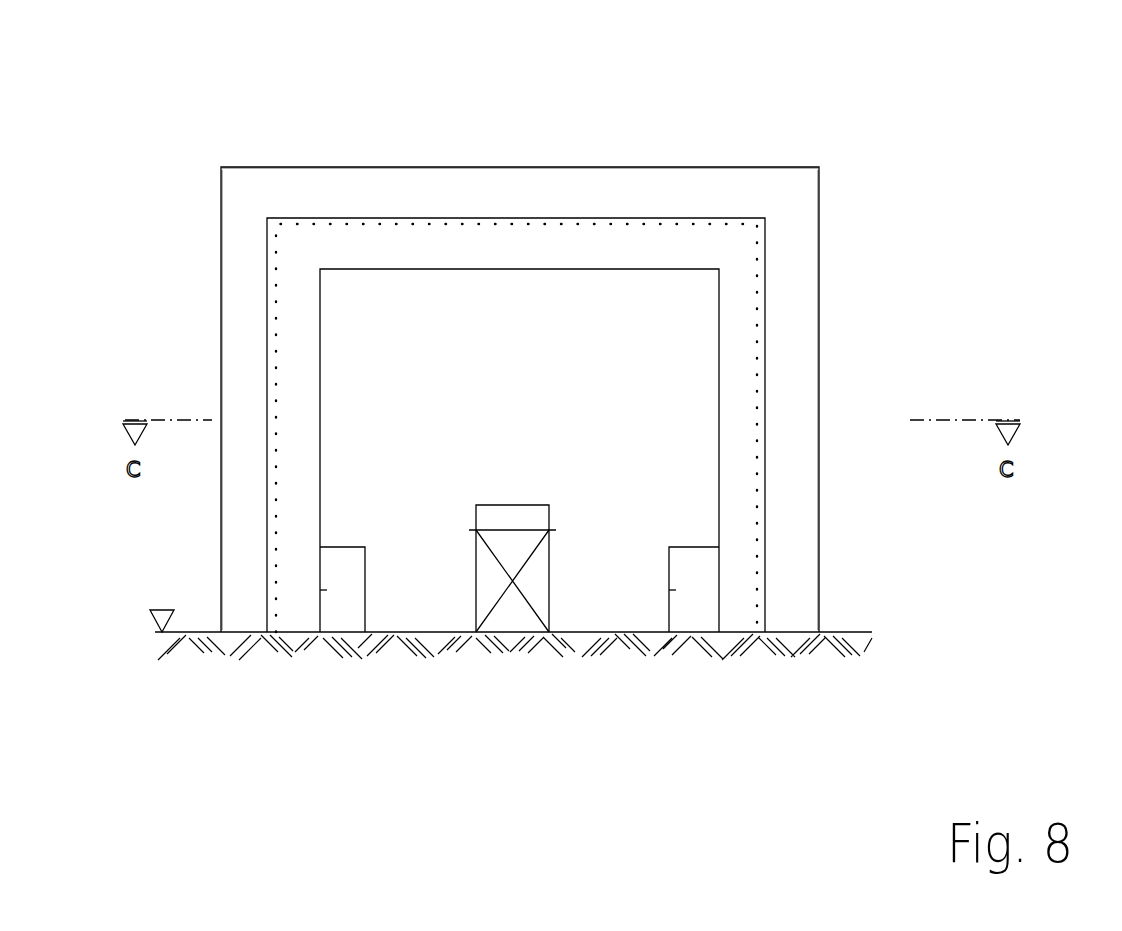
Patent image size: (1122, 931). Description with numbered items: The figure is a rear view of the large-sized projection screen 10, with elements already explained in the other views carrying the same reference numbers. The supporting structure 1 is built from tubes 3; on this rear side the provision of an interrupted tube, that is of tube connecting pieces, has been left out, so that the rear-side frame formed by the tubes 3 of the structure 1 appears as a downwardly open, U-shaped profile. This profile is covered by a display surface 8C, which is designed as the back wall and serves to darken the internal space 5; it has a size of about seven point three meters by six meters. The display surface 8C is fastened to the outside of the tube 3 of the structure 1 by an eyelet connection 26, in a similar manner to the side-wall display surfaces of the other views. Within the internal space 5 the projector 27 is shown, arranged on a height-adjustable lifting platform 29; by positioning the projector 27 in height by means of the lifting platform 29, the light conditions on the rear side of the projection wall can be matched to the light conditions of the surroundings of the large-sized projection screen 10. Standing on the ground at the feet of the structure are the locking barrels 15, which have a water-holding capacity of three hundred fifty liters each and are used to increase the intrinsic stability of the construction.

The structure 1 is at (221, 167).
The tubes 3 is at (538, 180).
The internal space 5 is at (527, 410).
The display surface 8C is at (736, 257).
The large-sized projection screen 10 is at (830, 128).
The locking barrels 15 is at (363, 546).
The eyelet connection 26 is at (620, 218).
The projector 27 is at (549, 512).
The lifting platform 29 is at (537, 575).